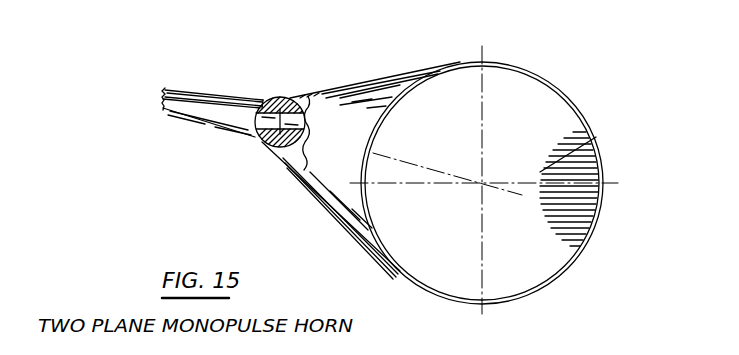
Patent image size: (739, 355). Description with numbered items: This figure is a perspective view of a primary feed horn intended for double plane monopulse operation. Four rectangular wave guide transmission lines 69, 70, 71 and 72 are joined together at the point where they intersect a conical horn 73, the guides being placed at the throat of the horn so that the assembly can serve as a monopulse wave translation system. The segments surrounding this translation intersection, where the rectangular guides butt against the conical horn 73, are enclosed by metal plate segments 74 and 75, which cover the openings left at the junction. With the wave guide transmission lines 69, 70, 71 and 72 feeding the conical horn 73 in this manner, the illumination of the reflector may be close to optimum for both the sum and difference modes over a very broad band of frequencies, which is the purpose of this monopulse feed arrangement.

The wave guide transmission line 69 is at (164, 90).
The wave guide transmission line 70 is at (188, 117).
The wave guide transmission line 71 is at (222, 92).
The wave guide transmission line 72 is at (280, 163).
The conical horn 73 is at (390, 87).
The metal plate segment 74 is at (273, 102).
The metal plate segment 75 is at (264, 143).